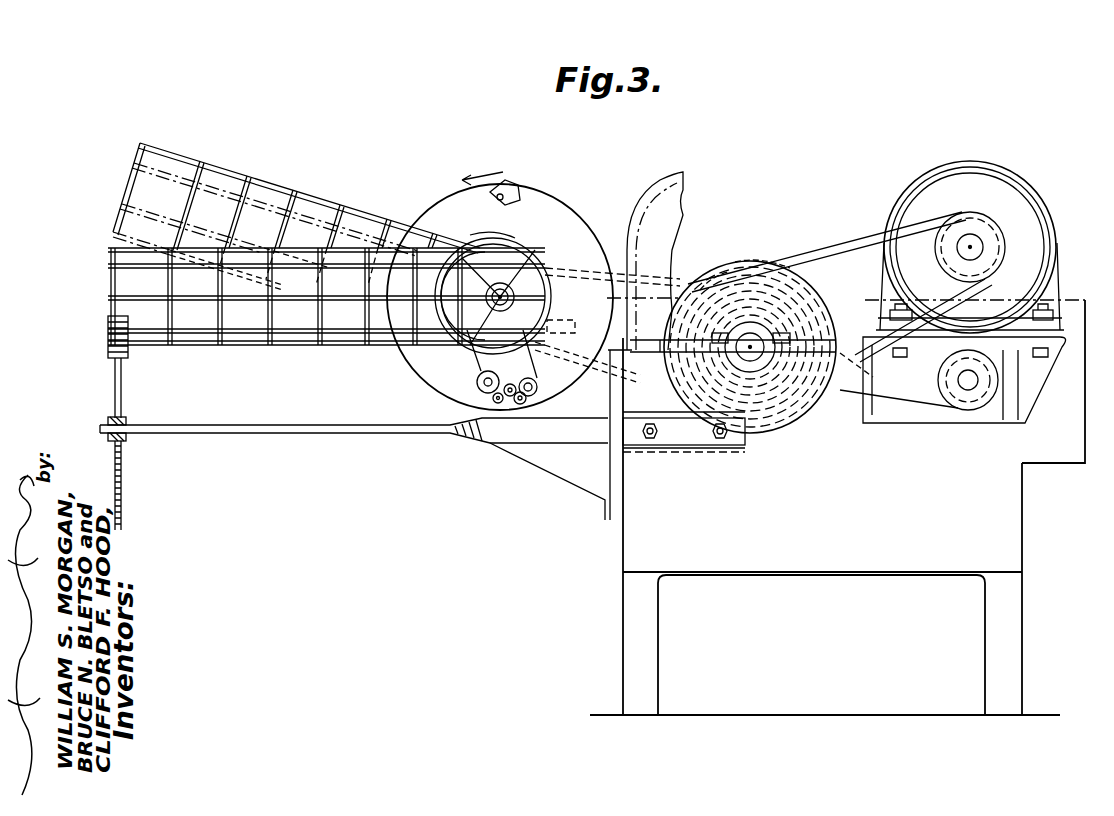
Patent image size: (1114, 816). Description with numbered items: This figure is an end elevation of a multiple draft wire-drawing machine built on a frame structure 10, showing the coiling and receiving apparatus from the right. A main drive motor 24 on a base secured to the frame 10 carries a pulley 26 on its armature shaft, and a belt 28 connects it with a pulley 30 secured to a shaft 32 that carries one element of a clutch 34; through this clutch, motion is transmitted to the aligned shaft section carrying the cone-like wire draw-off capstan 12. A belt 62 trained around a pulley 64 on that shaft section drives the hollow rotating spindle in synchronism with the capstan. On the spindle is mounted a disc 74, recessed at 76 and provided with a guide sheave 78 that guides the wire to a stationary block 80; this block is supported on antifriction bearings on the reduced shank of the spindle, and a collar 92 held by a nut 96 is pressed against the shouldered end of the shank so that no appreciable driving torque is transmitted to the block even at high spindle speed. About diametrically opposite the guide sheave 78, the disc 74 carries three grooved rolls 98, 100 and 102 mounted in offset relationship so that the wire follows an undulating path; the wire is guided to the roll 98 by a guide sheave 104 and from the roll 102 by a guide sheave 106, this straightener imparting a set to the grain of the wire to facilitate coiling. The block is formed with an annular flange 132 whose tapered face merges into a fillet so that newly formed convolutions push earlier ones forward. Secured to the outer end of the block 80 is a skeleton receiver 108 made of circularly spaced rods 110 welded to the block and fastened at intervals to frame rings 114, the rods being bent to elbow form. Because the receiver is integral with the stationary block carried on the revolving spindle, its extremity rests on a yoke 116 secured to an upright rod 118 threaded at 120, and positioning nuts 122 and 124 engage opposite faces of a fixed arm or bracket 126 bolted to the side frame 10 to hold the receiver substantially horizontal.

The frame structure 10 is at (823, 568).
The wire draw-off capstan 12 is at (792, 394).
The main drive motor 24 is at (967, 178).
The pulley 26 is at (1003, 246).
The belt 28 is at (836, 247).
The pulley 30 is at (800, 290).
The shaft 32 is at (760, 372).
The clutch 34 is at (772, 270).
The belt 62 is at (685, 278).
The pulley 64 is at (722, 276).
The disc 74 is at (574, 225).
The recess 76 is at (517, 202).
The guide sheave 78 is at (517, 183).
The stationary block 80 is at (517, 255).
The collar 92 is at (502, 288).
The nut 96 is at (510, 283).
The grooved roll 98 is at (520, 405).
The grooved roll 100 is at (511, 385).
The grooved roll 102 is at (497, 404).
The guide sheave 104 is at (545, 392).
The guide sheave 106 is at (477, 380).
The receiver 108 is at (318, 245).
The rods 110 is at (343, 318).
The frame rings 114 is at (228, 318).
The yoke 116 is at (108, 347).
The upright rod 118 is at (121, 375).
The threaded portion 120 is at (122, 474).
The positioning nut 122 is at (112, 420).
The positioning nut 124 is at (128, 437).
The fixed arm or bracket 126 is at (378, 432).
The annular flange 132 is at (463, 237).